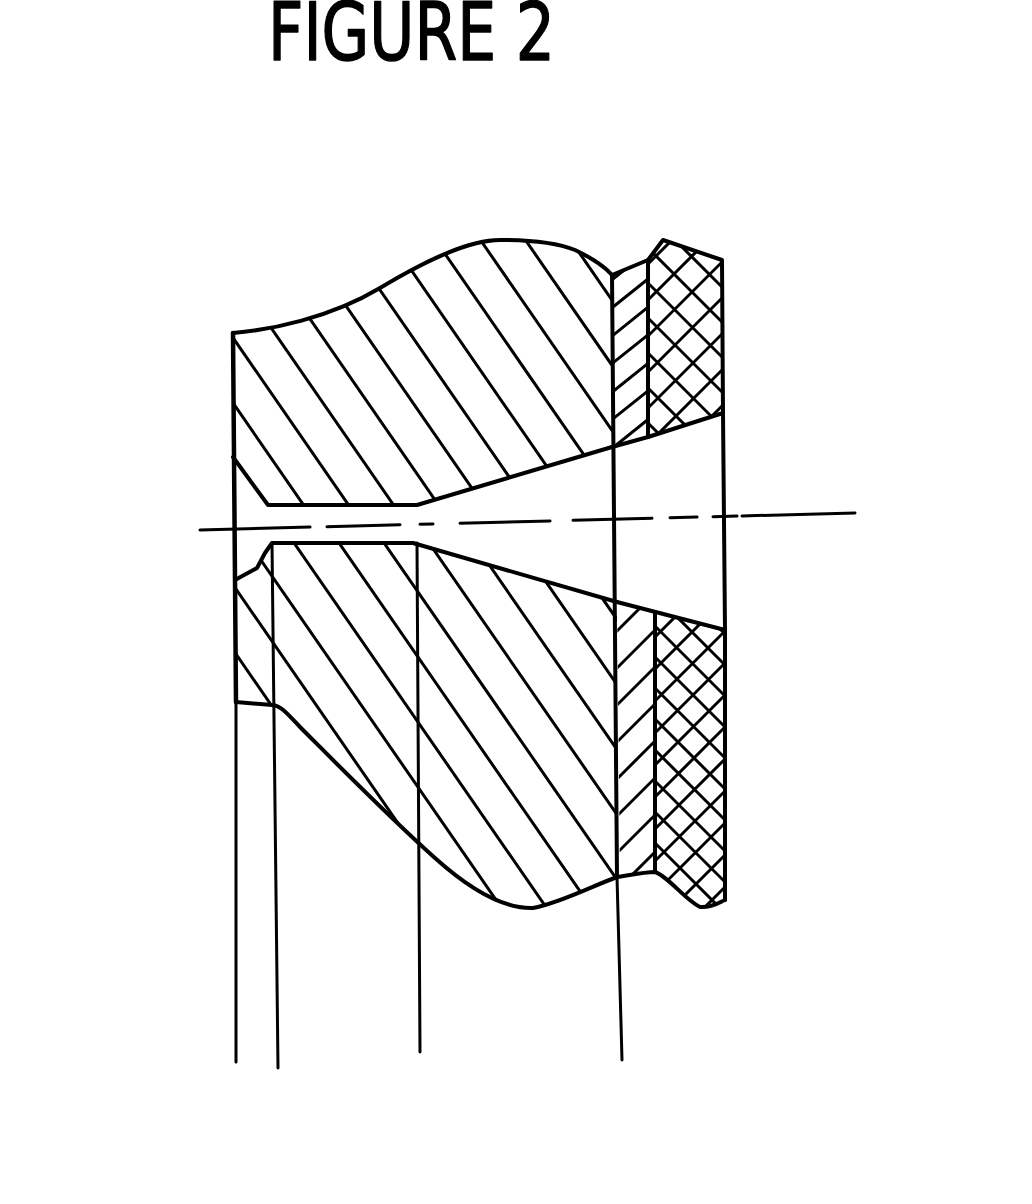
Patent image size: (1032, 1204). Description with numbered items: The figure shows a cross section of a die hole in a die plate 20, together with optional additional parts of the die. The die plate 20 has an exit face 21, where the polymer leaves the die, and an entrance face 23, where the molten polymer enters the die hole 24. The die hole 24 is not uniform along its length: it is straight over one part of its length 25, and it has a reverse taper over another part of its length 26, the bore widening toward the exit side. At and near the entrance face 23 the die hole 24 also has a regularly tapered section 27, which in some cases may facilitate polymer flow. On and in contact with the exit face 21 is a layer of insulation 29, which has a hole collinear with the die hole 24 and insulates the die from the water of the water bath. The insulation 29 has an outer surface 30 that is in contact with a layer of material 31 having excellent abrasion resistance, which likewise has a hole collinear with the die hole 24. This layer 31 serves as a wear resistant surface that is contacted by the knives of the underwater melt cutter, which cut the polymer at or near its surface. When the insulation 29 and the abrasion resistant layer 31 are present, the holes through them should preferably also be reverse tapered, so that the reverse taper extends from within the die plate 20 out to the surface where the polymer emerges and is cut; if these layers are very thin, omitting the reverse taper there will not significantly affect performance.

The die plate 20 is at (347, 337).
The exit face 21 is at (630, 265).
The entrance face 23 is at (233, 400).
The die hole 24 is at (200, 532).
The straight length 25 is at (418, 967).
The reverse taper length 26 is at (619, 963).
The regularly tapered section 27 is at (278, 970).
The layer of insulation 29 is at (640, 873).
The outer surface 30 is at (700, 608).
The layer of material having excellent abrasion resistance 31 is at (722, 350).